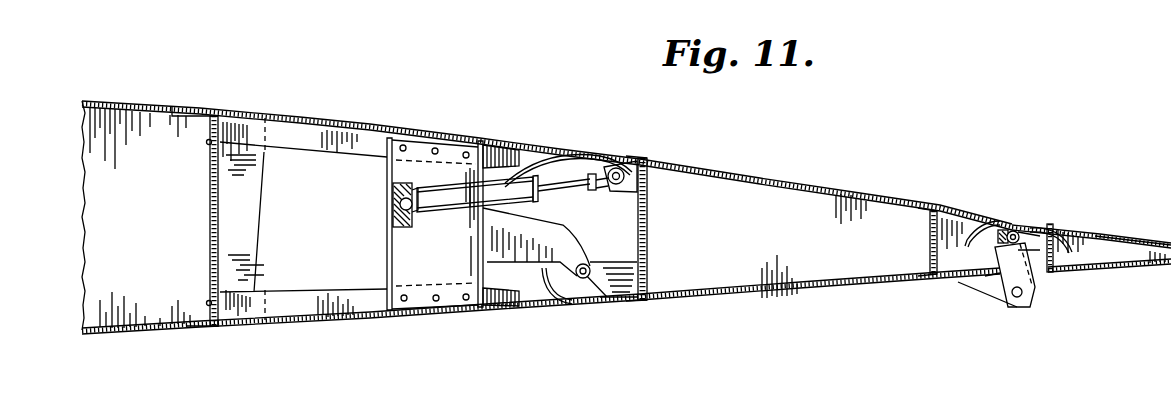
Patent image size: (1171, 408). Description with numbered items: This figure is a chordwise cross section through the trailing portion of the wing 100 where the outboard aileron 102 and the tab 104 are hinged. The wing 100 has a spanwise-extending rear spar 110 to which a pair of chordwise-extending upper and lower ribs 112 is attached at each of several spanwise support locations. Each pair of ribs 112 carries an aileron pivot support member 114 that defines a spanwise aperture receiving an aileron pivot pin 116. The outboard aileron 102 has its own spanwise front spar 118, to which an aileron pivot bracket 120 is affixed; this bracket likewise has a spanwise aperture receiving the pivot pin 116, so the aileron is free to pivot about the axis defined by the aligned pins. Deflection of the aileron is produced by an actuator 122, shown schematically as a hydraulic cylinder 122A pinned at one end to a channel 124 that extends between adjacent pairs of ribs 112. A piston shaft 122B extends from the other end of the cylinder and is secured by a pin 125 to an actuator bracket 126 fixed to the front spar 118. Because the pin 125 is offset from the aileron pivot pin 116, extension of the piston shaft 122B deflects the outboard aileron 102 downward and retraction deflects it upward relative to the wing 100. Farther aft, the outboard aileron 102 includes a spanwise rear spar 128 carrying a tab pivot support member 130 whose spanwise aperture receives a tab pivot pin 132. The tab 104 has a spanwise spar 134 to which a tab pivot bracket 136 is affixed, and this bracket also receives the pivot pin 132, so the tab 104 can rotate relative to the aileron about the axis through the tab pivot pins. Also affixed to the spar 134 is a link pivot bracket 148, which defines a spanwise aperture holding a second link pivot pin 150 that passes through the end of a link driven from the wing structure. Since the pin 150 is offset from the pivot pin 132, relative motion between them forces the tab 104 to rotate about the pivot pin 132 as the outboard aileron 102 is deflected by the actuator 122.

The wing 100 is at (316, 224).
The outboard aileron 102 is at (816, 245).
The tab 104 is at (1129, 264).
The rear spar 110 is at (211, 222).
The upper and lower ribs 112 is at (330, 146).
The aileron pivot support member 114 is at (473, 311).
The aileron pivot pin 116 is at (580, 279).
The front spar 118 is at (648, 250).
The aileron pivot bracket 120 is at (618, 280).
The actuator 122 is at (506, 173).
The hydraulic cylinder 122A is at (446, 214).
The piston shaft 122B is at (558, 178).
The channel 124 is at (400, 212).
The pin 125 is at (614, 186).
The actuator bracket 126 is at (633, 160).
The rear spar 128 is at (930, 236).
The tab pivot support member 130 is at (970, 220).
The tab pivot pin 132 is at (1022, 306).
The spar 134 is at (1077, 232).
The tab pivot bracket 136 is at (1053, 226).
The link pivot bracket 148 is at (1027, 233).
The second link pivot pin 150 is at (1011, 232).